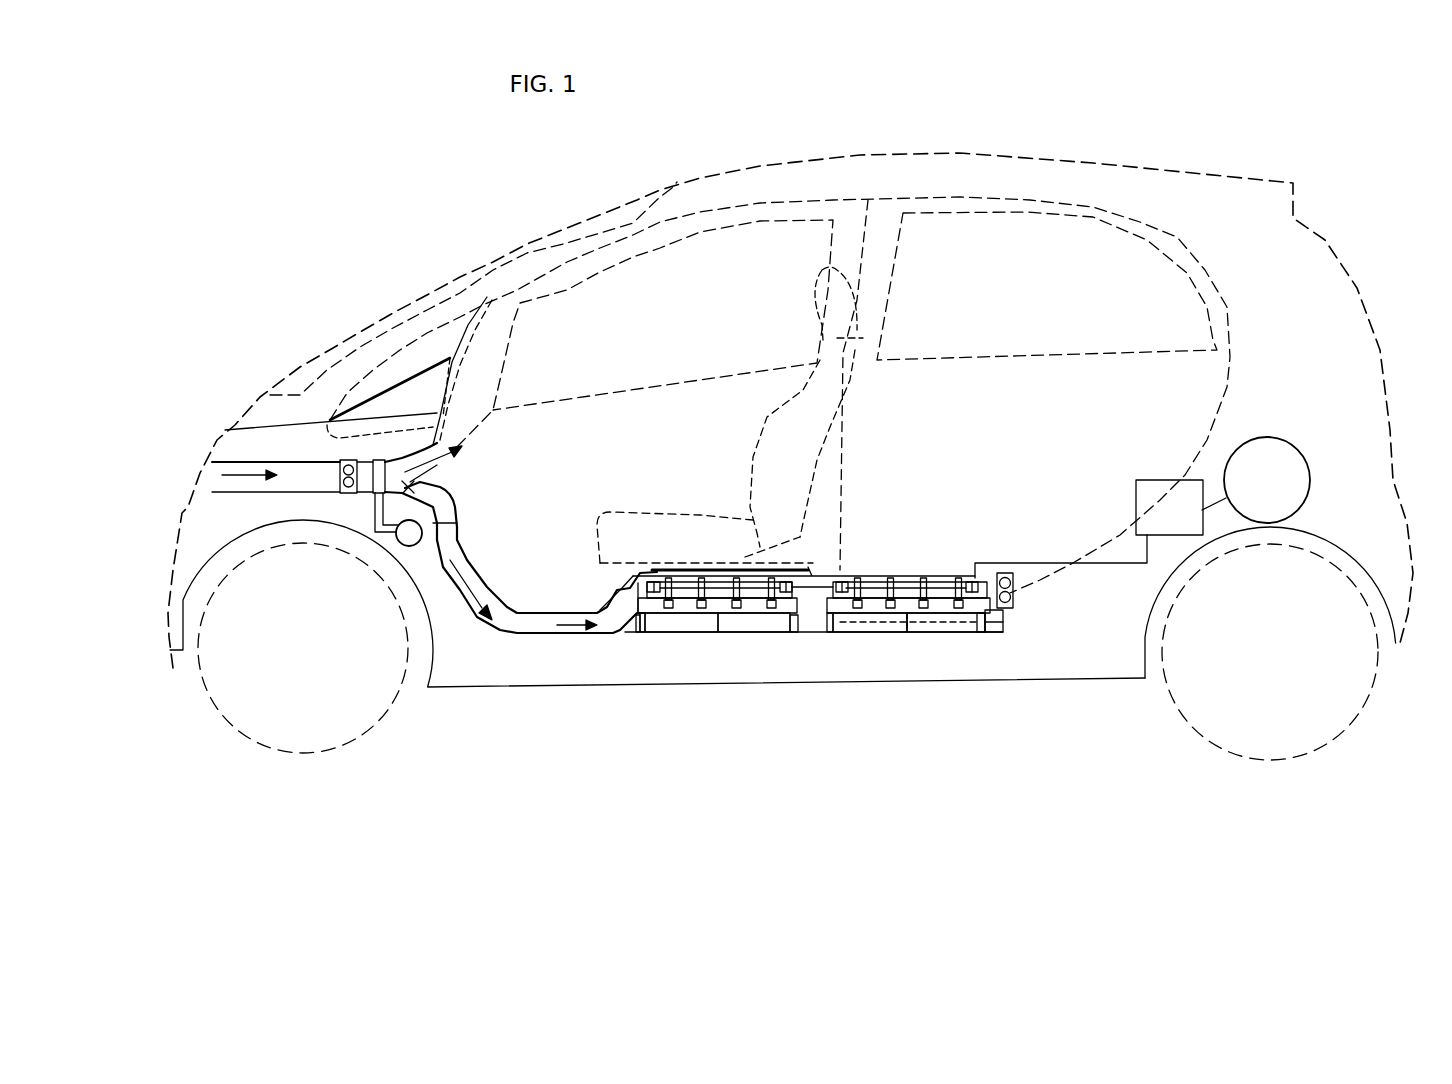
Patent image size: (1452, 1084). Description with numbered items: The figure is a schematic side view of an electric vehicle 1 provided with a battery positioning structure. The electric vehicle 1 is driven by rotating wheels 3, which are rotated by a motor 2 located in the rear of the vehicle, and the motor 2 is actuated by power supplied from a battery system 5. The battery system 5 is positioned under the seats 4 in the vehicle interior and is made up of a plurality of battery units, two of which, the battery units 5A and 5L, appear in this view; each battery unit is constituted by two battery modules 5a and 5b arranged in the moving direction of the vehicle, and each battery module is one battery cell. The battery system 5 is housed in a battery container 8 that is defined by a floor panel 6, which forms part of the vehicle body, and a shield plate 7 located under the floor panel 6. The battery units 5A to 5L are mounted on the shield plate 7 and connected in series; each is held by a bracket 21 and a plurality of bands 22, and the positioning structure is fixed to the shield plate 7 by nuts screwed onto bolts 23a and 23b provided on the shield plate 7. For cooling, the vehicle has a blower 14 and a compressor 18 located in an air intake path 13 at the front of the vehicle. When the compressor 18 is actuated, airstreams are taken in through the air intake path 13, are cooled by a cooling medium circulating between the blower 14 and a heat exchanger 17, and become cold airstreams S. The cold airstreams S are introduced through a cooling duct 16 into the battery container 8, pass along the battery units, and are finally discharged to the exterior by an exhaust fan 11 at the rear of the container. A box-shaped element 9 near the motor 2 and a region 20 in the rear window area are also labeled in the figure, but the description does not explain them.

The electric vehicle 1 is at (430, 248).
The motor 2 is at (1292, 478).
The wheels 3 is at (1320, 720).
The seats 4 is at (813, 442).
The battery system 5 is at (888, 565).
The battery unit 5A is at (676, 727).
The battery unit 5L is at (863, 727).
The battery module 5a is at (685, 620).
The battery module 5b is at (753, 620).
The floor panel 6 is at (1033, 562).
The shield plate 7 is at (992, 635).
The battery container 8 is at (841, 570).
The control unit 9 is at (1163, 482).
The exhaust fan 11 is at (1013, 598).
The air intake path 13 is at (237, 460).
The blower 14 is at (342, 470).
The cooling duct 16 is at (543, 620).
The heat exchanger 17 is at (367, 492).
The compressor 18 is at (409, 537).
The rear window 20 is at (975, 316).
The bracket 21 is at (652, 607).
The bands 22 is at (697, 580).
The bolt 23a is at (637, 625).
The bolt 23b is at (798, 620).
The cold airstreams S is at (568, 628).